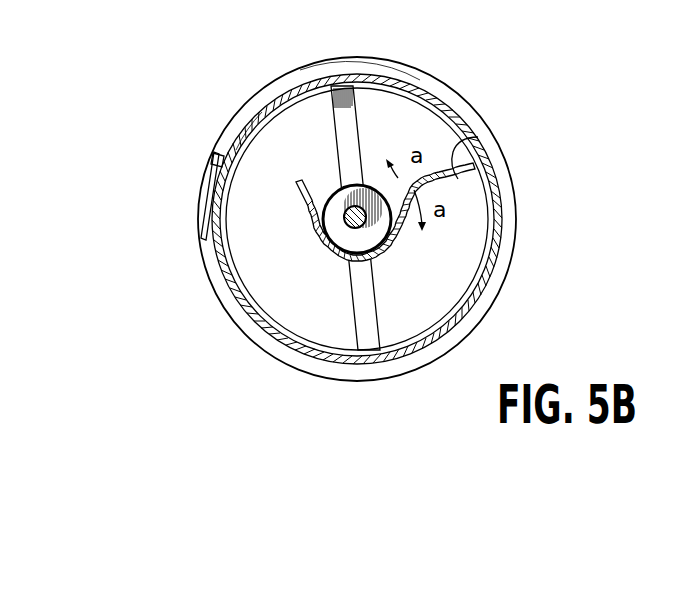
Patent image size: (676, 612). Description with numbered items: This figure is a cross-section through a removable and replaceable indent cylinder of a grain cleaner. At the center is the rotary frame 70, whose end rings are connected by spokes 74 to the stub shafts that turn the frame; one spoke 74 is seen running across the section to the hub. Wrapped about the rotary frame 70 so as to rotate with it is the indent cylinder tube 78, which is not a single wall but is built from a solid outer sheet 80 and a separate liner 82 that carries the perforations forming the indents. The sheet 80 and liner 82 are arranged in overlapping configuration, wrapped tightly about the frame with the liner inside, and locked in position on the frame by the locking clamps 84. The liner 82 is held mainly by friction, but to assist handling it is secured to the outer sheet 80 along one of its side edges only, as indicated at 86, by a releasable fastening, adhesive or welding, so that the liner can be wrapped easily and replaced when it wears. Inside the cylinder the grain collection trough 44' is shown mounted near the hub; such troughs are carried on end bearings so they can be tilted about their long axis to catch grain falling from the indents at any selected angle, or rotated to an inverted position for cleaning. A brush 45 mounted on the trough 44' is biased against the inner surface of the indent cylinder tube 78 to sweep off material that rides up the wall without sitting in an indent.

The rotary frame 70 is at (470, 80).
The spokes 74 is at (355, 112).
The indent cylinder tube 78 is at (505, 175).
The solid outer sheet 80 is at (308, 84).
The liner 82 is at (255, 140).
The locking clamps 84 is at (199, 192).
The liner securing position 86 is at (217, 153).
The brush 45 is at (478, 137).
The spring 44' is at (440, 225).